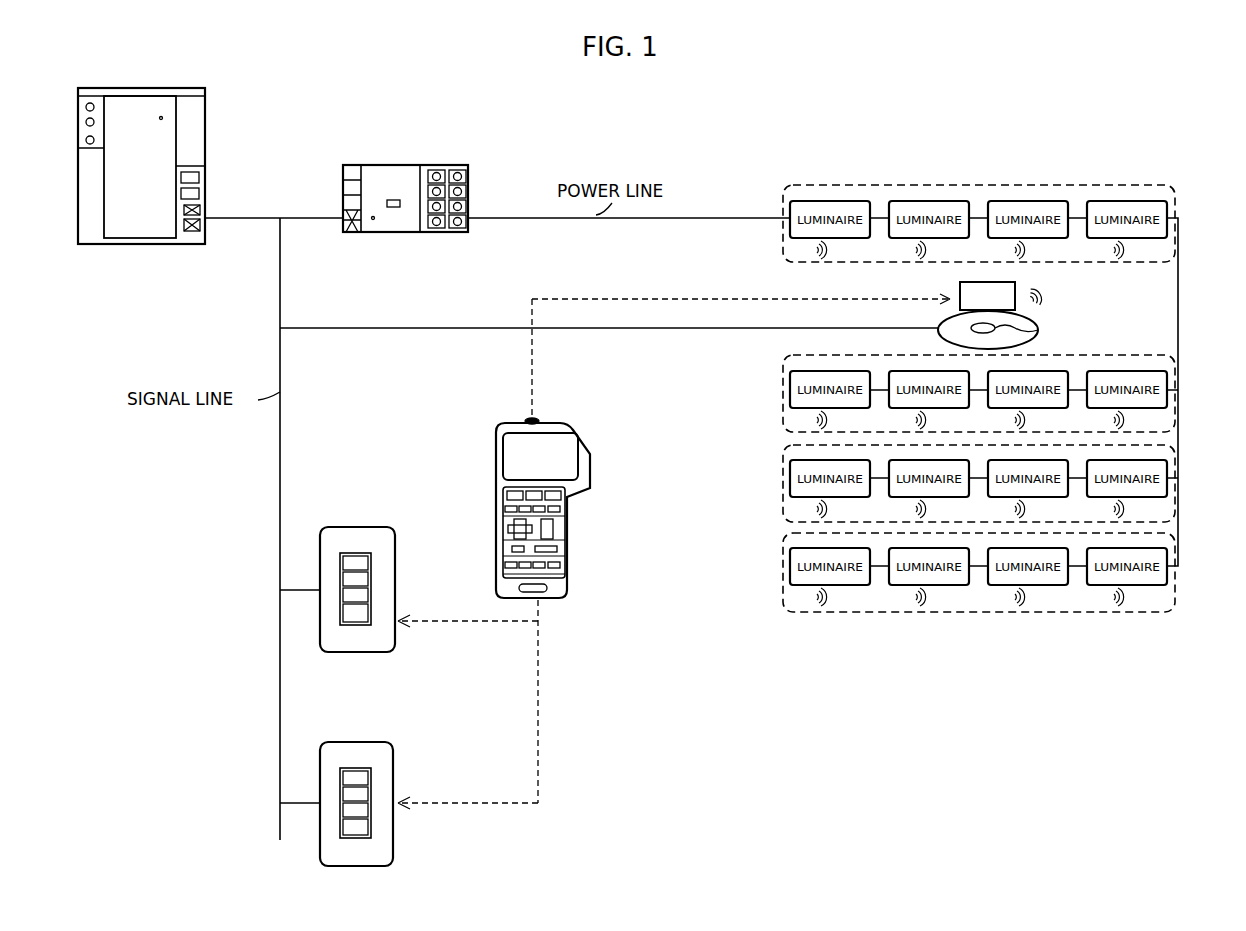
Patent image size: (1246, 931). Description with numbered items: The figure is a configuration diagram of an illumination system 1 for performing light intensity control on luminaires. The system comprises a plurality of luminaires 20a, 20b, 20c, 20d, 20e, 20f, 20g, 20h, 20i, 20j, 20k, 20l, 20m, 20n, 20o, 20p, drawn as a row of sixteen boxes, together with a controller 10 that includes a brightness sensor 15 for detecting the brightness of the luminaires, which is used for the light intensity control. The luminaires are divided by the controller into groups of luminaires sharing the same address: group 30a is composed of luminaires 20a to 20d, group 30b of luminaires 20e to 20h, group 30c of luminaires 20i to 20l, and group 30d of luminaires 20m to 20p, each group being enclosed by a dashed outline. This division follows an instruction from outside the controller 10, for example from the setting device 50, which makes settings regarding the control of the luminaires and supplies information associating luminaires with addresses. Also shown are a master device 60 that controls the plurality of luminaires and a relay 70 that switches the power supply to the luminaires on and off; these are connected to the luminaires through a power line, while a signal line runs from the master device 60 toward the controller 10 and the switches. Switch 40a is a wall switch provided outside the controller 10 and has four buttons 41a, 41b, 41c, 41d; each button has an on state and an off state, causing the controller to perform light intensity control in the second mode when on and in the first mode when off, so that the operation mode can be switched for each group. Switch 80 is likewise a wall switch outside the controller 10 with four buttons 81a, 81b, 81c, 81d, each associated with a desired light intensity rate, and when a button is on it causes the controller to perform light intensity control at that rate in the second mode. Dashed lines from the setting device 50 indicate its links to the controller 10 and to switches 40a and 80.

The illumination system 1 is at (1153, 131).
The controller 10 is at (1015, 290).
The brightness sensor 15 is at (1036, 330).
The luminaire 20a is at (842, 239).
The luminaire 20b is at (941, 239).
The luminaire 20c is at (1040, 239).
The luminaire 20d is at (1139, 239).
The luminaire 20e is at (842, 409).
The luminaire 20f is at (941, 409).
The luminaire 20g is at (1040, 409).
The luminaire 20h is at (1139, 409).
The luminaire 20i is at (842, 498).
The luminaire 20j is at (941, 498).
The luminaire 20k is at (1040, 498).
The luminaire 20l is at (1139, 498).
The luminaire 20m is at (842, 586).
The luminaire 20n is at (941, 586).
The luminaire 20o is at (1040, 586).
The luminaire 20p is at (1139, 586).
The group 30a is at (1002, 217).
The group 30b is at (1002, 387).
The group 30c is at (1002, 477).
The group 30d is at (1002, 566).
The switch 40a is at (378, 578).
The button 41a is at (360, 564).
The button 41b is at (360, 580).
The button 41c is at (360, 596).
The button 41d is at (360, 613).
The setting device 50 is at (556, 425).
The master device 60 is at (188, 92).
The relay 70 is at (443, 170).
The switch 80 is at (378, 794).
The button 81a is at (360, 779).
The button 81b is at (360, 795).
The button 81c is at (360, 811).
The button 81d is at (360, 827).